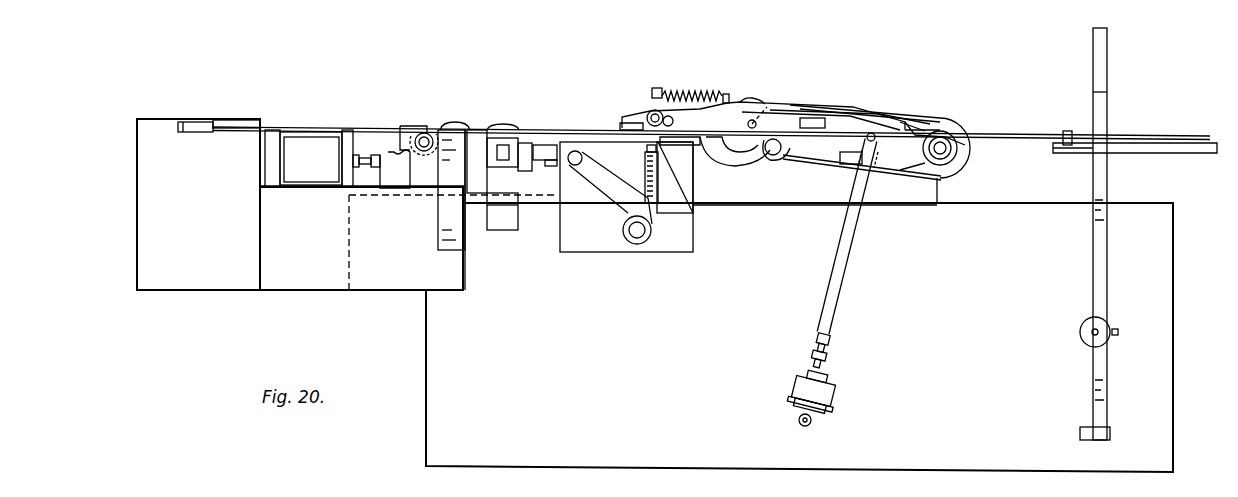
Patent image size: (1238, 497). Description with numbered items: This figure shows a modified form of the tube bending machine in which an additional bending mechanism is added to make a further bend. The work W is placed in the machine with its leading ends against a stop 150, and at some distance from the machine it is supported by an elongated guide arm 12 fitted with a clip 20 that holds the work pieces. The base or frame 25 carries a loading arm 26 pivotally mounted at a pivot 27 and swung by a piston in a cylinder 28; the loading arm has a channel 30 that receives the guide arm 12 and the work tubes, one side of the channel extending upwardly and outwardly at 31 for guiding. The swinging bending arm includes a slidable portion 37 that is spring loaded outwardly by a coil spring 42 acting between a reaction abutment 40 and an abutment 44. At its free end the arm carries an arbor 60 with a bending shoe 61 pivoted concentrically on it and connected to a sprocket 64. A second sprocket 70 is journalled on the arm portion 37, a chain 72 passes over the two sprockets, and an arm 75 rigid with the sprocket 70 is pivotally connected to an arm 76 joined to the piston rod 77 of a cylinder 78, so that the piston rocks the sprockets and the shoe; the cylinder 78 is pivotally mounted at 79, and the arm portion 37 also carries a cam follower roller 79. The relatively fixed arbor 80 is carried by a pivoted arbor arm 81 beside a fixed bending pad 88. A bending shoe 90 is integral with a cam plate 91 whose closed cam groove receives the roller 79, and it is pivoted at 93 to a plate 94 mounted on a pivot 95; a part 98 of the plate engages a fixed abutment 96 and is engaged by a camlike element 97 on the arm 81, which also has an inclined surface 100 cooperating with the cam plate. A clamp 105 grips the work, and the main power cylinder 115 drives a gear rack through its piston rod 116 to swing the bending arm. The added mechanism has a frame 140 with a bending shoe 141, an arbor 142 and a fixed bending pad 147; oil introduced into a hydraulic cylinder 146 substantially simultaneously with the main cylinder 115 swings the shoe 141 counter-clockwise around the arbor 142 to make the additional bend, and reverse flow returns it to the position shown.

The guide arm 12 is at (1195, 153).
The clip 20 is at (1067, 131).
The base or frame 25 is at (690, 391).
The loading arm 26 is at (1107, 255).
The pivot 27 is at (1107, 430).
The cylinder 28 is at (1105, 325).
The channel 30 is at (1107, 128).
The upwardly and outwardly extending side of channel 31 is at (1107, 65).
The slidable arm portion 37 is at (840, 166).
The reaction abutment 40 is at (658, 88).
The coil spring 42 is at (702, 92).
The abutment 44 is at (726, 96).
The arbor 60 is at (955, 170).
The bending shoe or pad 61 is at (955, 127).
The sprocket 64 is at (972, 160).
The sprocket 70 is at (756, 103).
The chain 72 is at (880, 166).
The arm 75 is at (790, 105).
The arm 76 is at (848, 258).
The piston rod 77 is at (832, 347).
The cylinder 78 is at (832, 394).
The cam follower roller 79 is at (779, 152).
The relatively fixed arbor 80 is at (650, 112).
The pivoted arbor arm 81 is at (628, 212).
The fixed bending pad 88 is at (663, 170).
The bending shoe or pad 90 is at (706, 146).
The cam plate 91 is at (762, 170).
The pivotal connection 93 is at (669, 115).
The plate 94 is at (624, 188).
The pivot 95 is at (620, 193).
The fixed abutment 96 is at (655, 222).
The camlike element 97 is at (582, 158).
The part of plate 98 is at (660, 200).
The inclined surface 100 is at (620, 122).
The clamp 105 is at (517, 118).
The main power cylinder 115 is at (480, 132).
The piston rod 116 is at (549, 150).
The frame 140 is at (180, 278).
The bending shoe 141 is at (418, 124).
The arbor 142 is at (425, 152).
The hydraulic cylinder 146 is at (313, 148).
The fixed bending pad 147 is at (458, 125).
The stop 150 is at (180, 124).
The work W is at (365, 127).